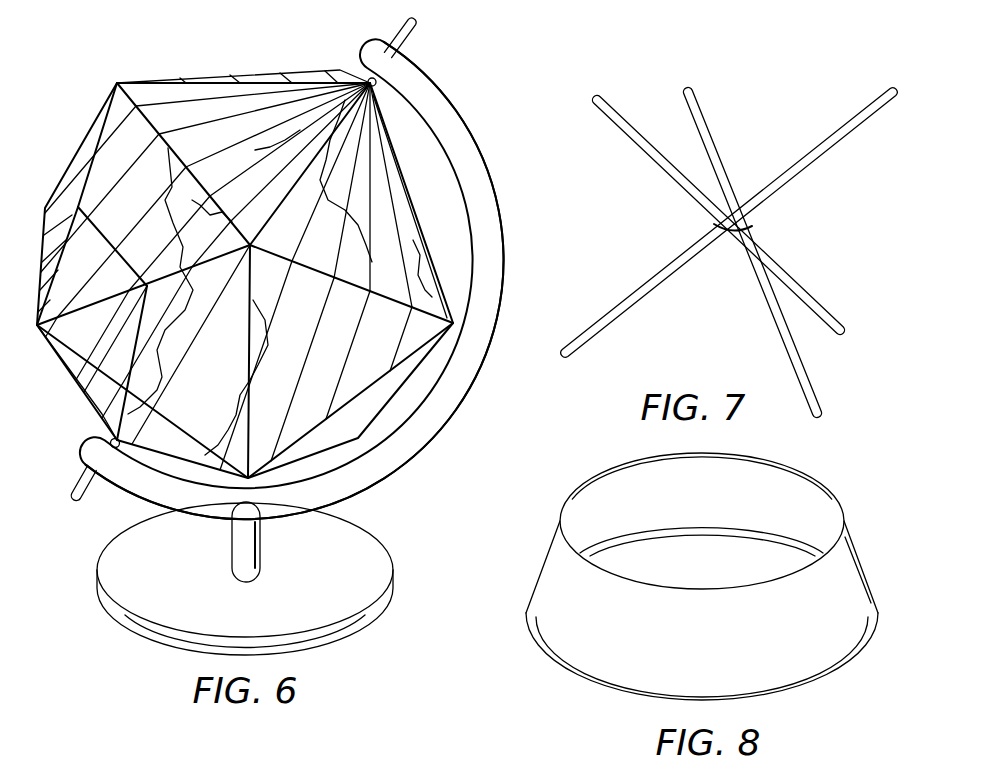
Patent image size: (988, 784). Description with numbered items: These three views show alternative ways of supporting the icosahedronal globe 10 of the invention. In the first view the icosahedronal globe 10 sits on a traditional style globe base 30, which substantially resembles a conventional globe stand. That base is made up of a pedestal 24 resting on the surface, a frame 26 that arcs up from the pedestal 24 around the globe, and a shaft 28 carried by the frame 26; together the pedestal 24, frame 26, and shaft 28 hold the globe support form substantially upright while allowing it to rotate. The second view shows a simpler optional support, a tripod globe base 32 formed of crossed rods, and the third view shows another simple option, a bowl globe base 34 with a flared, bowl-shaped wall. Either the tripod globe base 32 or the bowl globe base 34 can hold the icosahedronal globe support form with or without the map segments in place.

In FIG. 6, the icosahedronal globe 10 is at (90, 80).
In FIG. 6, the pedestal 24 is at (377, 547).
In FIG. 6, the frame 26 is at (383, 462).
In FIG. 6, the shaft 28 is at (410, 40).
In FIG. 6, the traditional style globe base 30 is at (487, 373).
In FIG. 7, the tripod globe base 32 is at (660, 231).
In FIG. 8, the bowl globe base 34 is at (519, 640).